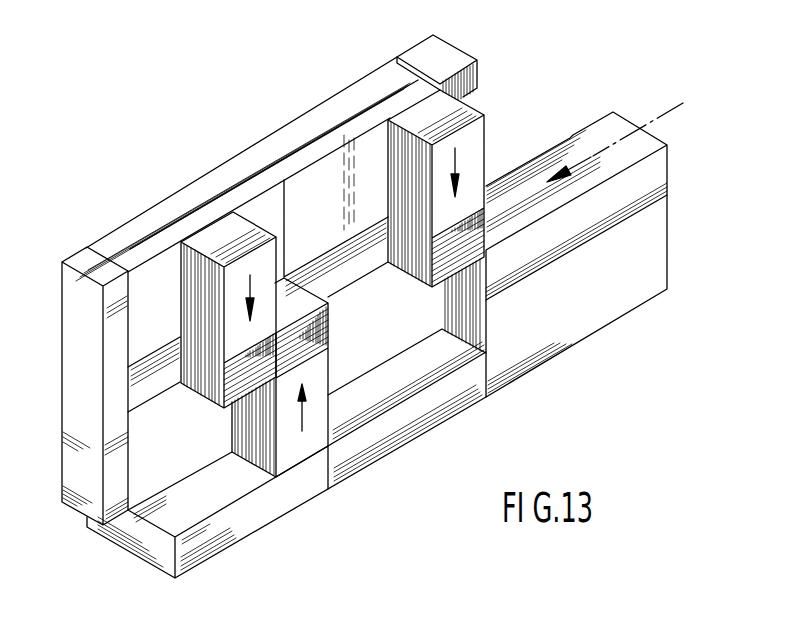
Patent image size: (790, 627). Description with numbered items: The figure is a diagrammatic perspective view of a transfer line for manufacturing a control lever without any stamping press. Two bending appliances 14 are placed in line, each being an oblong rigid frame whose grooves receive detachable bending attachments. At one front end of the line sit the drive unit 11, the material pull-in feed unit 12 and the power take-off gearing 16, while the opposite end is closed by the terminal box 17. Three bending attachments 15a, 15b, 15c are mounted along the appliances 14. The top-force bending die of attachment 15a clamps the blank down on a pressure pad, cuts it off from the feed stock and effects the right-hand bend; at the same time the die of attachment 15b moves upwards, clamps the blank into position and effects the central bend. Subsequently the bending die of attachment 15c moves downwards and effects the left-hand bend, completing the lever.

The drive unit 11 is at (628, 306).
The material pull-in feed unit 12 is at (652, 178).
The bending appliance 14 is at (157, 206).
The bending attachment 15a is at (477, 141).
The bending attachment 15b is at (320, 381).
The bending attachment 15c is at (222, 230).
The power take-off gearing 16 is at (412, 60).
The terminal box 17 is at (66, 295).